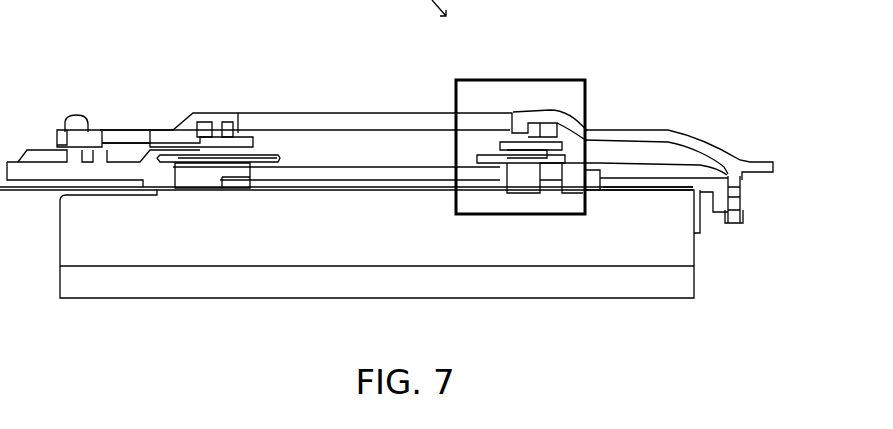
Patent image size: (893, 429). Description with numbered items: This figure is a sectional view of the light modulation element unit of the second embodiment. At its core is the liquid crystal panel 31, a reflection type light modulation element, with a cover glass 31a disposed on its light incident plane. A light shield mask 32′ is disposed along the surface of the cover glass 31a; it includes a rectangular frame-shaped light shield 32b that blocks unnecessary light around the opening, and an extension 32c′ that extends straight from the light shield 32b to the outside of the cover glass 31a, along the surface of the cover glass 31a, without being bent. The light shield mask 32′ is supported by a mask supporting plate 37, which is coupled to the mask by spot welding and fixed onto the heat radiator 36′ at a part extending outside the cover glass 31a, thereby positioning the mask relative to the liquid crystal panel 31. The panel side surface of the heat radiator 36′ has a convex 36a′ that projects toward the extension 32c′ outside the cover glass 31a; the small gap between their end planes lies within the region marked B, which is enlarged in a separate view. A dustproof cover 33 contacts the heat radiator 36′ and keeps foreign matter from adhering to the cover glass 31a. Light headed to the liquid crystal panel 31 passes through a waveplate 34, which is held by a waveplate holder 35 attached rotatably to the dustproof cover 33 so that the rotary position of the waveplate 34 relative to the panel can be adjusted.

The waveplate holder 35 is at (193, 113).
The waveplate 34 is at (287, 114).
The cover glass 31a is at (302, 165).
The liquid crystal panel 31 is at (347, 180).
The B part B is at (545, 80).
The light shield 32b is at (489, 153).
The extension 32c′ is at (553, 153).
The convex 36a′ is at (552, 178).
The dustproof cover 33 is at (617, 187).
The mask supporting plate 37 is at (498, 162).
The light shield mask 32′ is at (515, 158).
The heat radiator 36′ is at (540, 268).